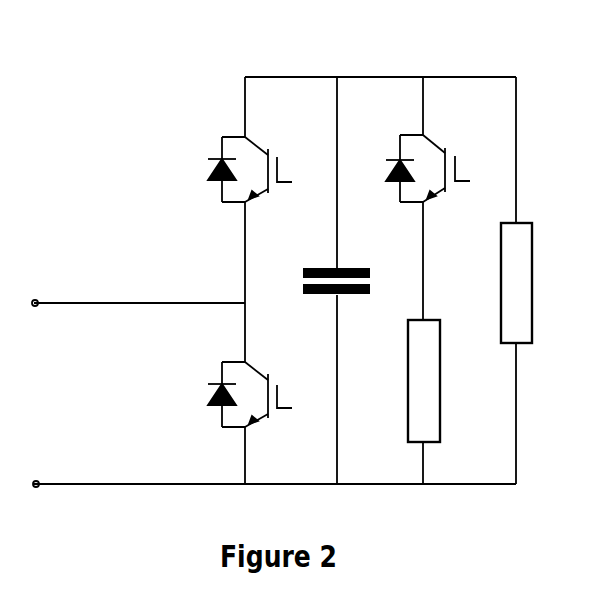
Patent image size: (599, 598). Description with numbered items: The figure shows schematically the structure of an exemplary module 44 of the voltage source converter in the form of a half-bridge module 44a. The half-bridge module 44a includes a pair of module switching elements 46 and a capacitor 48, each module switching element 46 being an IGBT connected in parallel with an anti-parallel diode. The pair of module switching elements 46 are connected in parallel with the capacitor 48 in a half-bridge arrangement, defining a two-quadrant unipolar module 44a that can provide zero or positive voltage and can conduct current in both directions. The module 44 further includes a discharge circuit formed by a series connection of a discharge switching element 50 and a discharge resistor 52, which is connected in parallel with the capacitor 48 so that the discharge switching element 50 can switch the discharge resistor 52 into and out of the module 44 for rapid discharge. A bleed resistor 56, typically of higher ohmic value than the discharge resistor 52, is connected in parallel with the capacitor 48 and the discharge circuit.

The module 44 is at (282, 249).
The half-bridge module 44a is at (282, 282).
The module switching element 46 is at (238, 190).
The capacitor 48 is at (326, 297).
The discharge switching element 50 is at (406, 203).
The discharge resistor 52 is at (422, 367).
The bleed resistor 56 is at (517, 270).